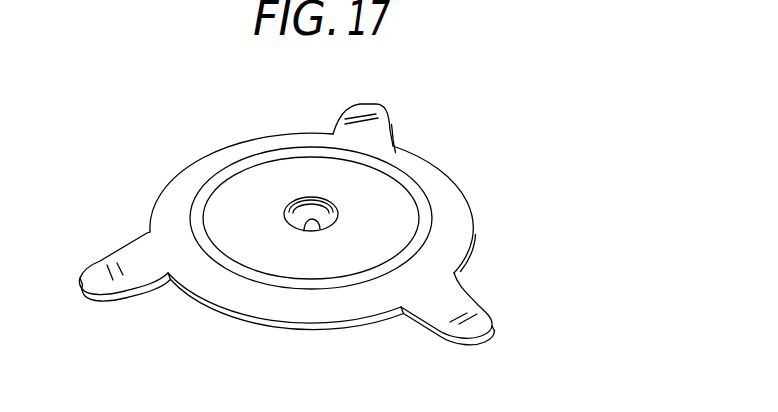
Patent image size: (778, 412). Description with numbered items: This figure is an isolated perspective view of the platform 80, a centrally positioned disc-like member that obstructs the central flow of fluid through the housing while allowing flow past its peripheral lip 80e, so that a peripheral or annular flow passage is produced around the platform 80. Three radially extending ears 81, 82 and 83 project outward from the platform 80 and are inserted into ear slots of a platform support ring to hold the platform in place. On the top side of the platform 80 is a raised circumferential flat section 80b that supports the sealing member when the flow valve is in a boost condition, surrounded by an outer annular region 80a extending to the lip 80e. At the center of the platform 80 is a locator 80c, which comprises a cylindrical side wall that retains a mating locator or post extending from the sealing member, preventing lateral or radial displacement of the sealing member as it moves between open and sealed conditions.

The platform 80 is at (331, 215).
The flat annular portion 80a is at (457, 210).
The circumferential flat section 80b is at (370, 181).
The locator 80c is at (322, 228).
The peripheral lip 80e is at (470, 239).
The radially extending ear 81 is at (492, 317).
The radially extending ear 82 is at (367, 103).
The radially extending ear 83 is at (80, 281).